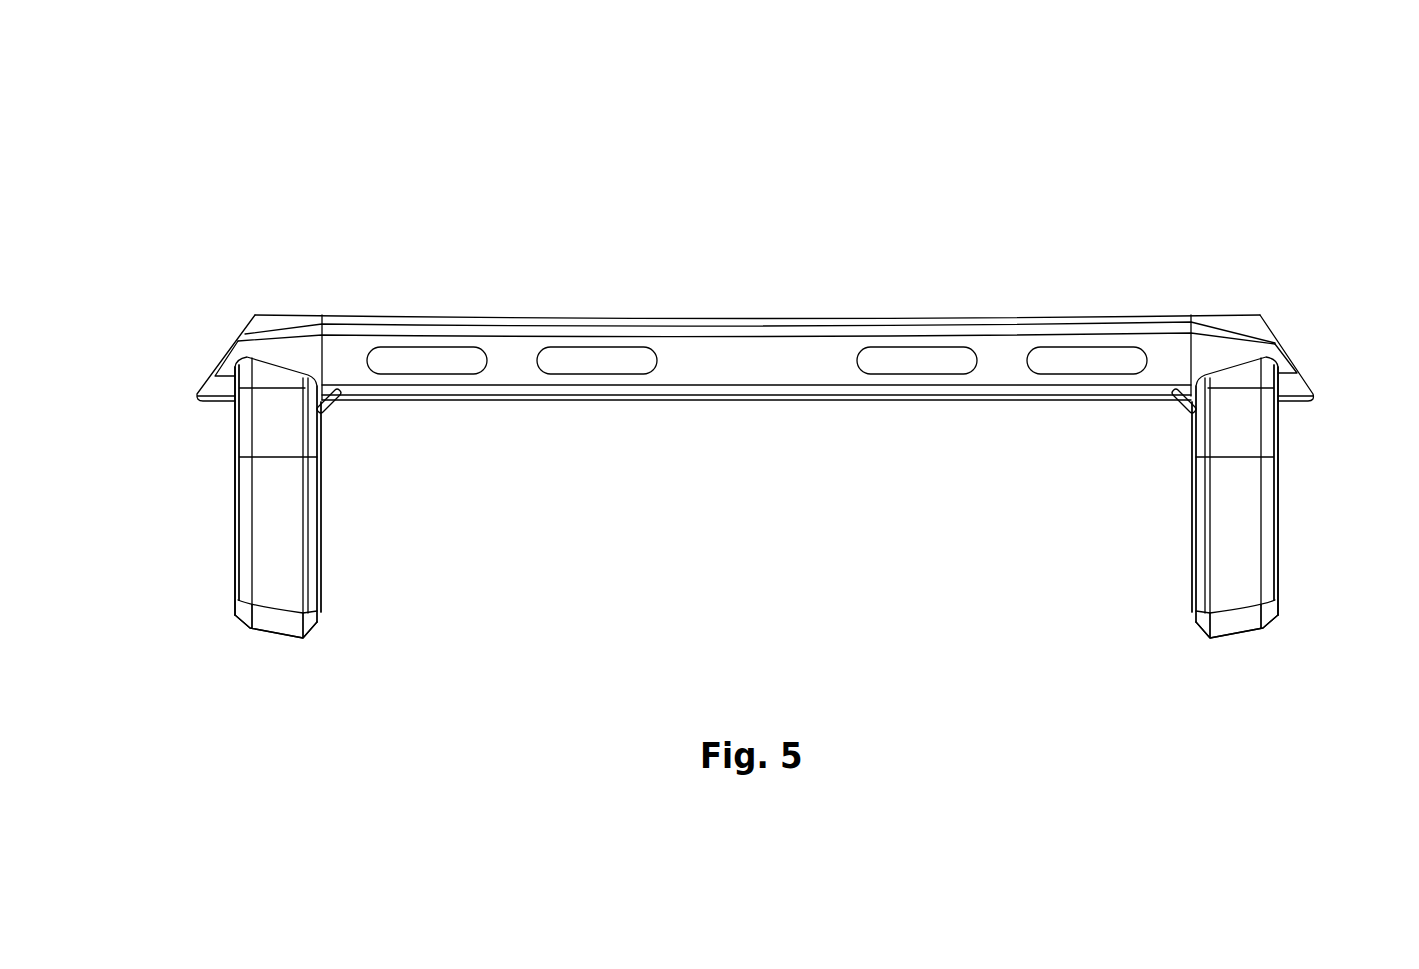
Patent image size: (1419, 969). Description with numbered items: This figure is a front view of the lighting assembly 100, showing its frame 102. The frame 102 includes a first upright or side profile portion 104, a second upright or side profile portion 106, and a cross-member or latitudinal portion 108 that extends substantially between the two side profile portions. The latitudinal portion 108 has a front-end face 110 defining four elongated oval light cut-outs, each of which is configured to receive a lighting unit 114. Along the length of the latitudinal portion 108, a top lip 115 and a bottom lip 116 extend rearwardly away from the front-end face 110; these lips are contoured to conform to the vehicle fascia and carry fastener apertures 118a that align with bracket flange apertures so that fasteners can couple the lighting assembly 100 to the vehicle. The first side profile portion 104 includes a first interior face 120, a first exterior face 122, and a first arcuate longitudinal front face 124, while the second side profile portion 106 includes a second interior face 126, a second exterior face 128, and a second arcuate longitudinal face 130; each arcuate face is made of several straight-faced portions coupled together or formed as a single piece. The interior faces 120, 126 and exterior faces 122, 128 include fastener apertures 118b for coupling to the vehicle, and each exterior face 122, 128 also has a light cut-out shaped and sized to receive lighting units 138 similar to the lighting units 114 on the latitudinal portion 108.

The lighting assembly 100 is at (692, 179).
The frame 102 is at (687, 365).
The first side profile portion 104 is at (1277, 590).
The second side profile portion 106 is at (308, 588).
The latitudinal portion 108 is at (515, 368).
The front-end face 110 is at (817, 365).
The lighting unit 114 is at (427, 356).
The top lip 115 is at (818, 318).
The bottom lip 116 is at (738, 402).
The fastener apertures 118a is at (503, 396).
The fastener apertures 118b is at (318, 498).
The first interior face 120 is at (1193, 565).
The first exterior face 122 is at (1277, 545).
The first arcuate longitudinal front face 124 is at (1240, 598).
The second interior face 126 is at (320, 555).
The second exterior face 128 is at (237, 562).
The second arcuate longitudinal face 130 is at (275, 598).
The lighting units 138 is at (237, 512).